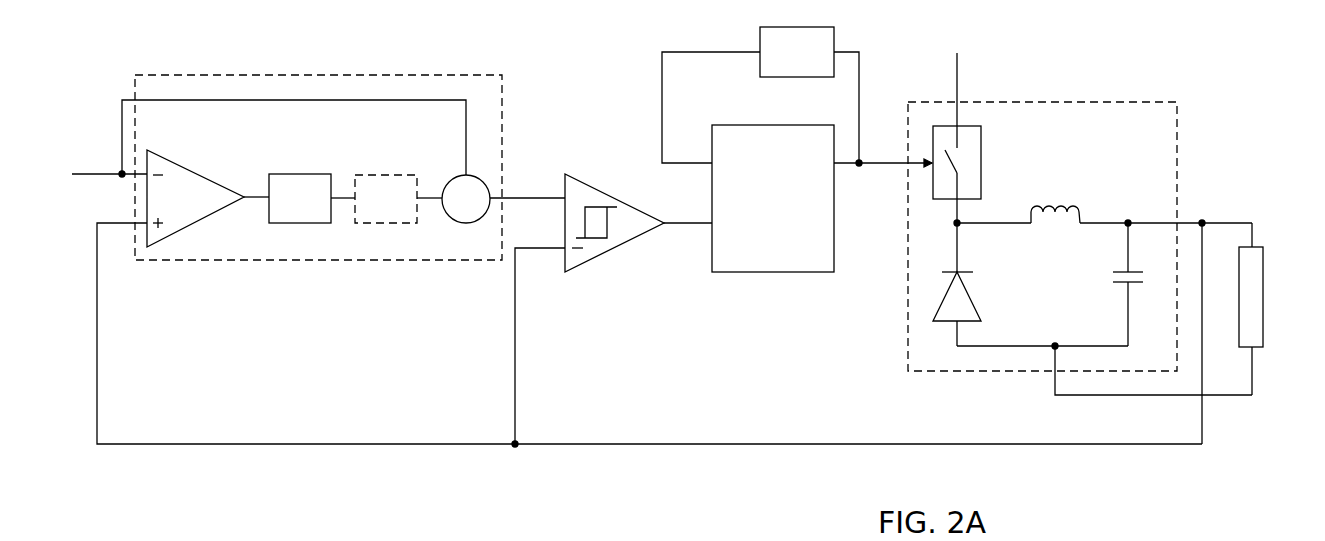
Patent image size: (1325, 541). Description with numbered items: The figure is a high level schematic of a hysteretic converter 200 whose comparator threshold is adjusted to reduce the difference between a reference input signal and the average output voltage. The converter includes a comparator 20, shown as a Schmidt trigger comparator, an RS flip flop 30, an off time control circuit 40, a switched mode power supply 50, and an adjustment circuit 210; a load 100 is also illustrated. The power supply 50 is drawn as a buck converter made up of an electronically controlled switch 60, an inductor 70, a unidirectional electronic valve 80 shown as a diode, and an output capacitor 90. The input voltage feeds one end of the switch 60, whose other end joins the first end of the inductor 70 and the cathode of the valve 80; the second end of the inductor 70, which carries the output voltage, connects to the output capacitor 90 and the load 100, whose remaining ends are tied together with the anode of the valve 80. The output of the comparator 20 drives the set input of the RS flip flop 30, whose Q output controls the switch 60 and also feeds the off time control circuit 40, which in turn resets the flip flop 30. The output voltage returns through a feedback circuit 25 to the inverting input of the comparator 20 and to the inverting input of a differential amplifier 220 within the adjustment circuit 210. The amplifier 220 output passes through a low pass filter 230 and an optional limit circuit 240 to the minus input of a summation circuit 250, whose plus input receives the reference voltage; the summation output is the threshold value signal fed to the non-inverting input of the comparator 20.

The hysteretic converter 200 is at (563, 39).
The adjustment circuit 210 is at (503, 130).
The differential amplifier 220 is at (195, 172).
The low pass filter 230 is at (307, 225).
The limit circuit 240 is at (390, 225).
The summation circuit 250 is at (466, 223).
The comparator 20 is at (600, 257).
The RS flip flop 30 is at (760, 273).
The off time control circuit 40 is at (760, 63).
The switched mode power supply 50 is at (1177, 142).
The electronically controlled switch 60 is at (980, 175).
The inductor 70 is at (1080, 217).
The unidirectional electronic valve 80 is at (981, 315).
The output capacitor 90 is at (1113, 283).
The load 100 is at (1263, 308).
The feedback circuit 25 is at (785, 444).